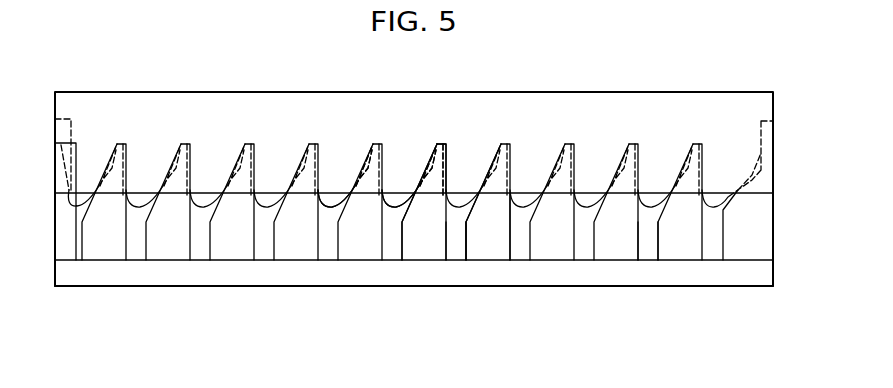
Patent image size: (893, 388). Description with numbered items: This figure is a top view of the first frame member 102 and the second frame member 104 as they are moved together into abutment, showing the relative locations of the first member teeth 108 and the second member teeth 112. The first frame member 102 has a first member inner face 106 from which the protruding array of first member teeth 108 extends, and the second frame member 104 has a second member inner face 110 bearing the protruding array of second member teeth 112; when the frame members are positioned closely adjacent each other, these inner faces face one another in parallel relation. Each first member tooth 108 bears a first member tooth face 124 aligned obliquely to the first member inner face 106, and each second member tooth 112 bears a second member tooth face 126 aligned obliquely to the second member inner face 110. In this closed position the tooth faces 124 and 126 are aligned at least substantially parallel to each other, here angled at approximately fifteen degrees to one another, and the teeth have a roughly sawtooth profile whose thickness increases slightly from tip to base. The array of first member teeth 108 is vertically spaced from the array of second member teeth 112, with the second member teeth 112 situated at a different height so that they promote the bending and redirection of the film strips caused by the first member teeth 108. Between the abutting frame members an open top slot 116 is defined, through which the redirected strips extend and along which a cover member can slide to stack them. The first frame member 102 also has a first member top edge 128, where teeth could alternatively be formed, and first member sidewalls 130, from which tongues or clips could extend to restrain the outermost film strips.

The first frame member 102 is at (283, 275).
The second frame member 104 is at (555, 92).
The first member inner face 106 is at (455, 258).
The first member teeth 108 is at (497, 214).
The second member inner face 110 is at (437, 152).
The second member teeth 112 is at (338, 165).
The top slot 116 is at (648, 233).
The first member tooth face 124 is at (408, 206).
The second member tooth face 126 is at (405, 206).
The first member top edge 128 is at (600, 277).
The first member sidewalls 130 is at (767, 181).